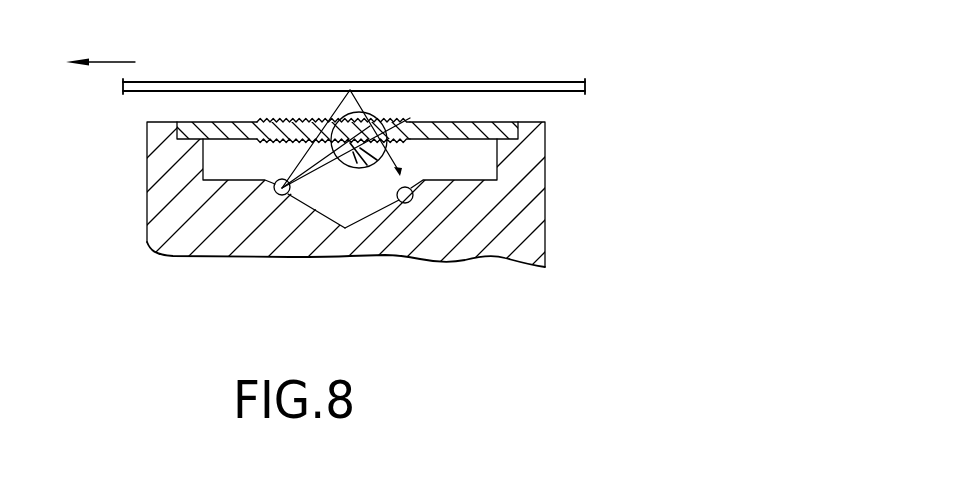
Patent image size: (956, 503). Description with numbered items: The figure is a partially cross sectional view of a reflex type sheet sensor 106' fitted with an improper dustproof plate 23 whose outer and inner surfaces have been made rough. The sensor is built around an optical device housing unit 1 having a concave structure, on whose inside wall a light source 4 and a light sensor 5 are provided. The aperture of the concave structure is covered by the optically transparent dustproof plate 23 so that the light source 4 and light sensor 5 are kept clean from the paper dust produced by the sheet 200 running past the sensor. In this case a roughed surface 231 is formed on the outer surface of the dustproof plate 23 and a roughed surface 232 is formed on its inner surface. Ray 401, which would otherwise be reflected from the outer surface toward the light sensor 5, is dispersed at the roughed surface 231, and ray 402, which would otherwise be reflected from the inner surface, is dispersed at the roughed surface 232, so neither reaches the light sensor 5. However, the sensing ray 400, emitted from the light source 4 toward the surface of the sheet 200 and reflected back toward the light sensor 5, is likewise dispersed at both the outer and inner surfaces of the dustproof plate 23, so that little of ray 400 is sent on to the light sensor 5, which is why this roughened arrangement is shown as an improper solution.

The optical device housing unit 1 is at (146, 211).
The light source 4 is at (275, 183).
The light sensor 5 is at (397, 203).
The dustproof plate 23 is at (215, 124).
The roughed surface 231 is at (267, 124).
The roughed surface 232 is at (300, 122).
The sheet 200 is at (520, 82).
The ray 400 is at (355, 113).
The ray 401 is at (358, 113).
The ray 402 is at (412, 119).
The reflex type sheet sensor 106' is at (358, 195).